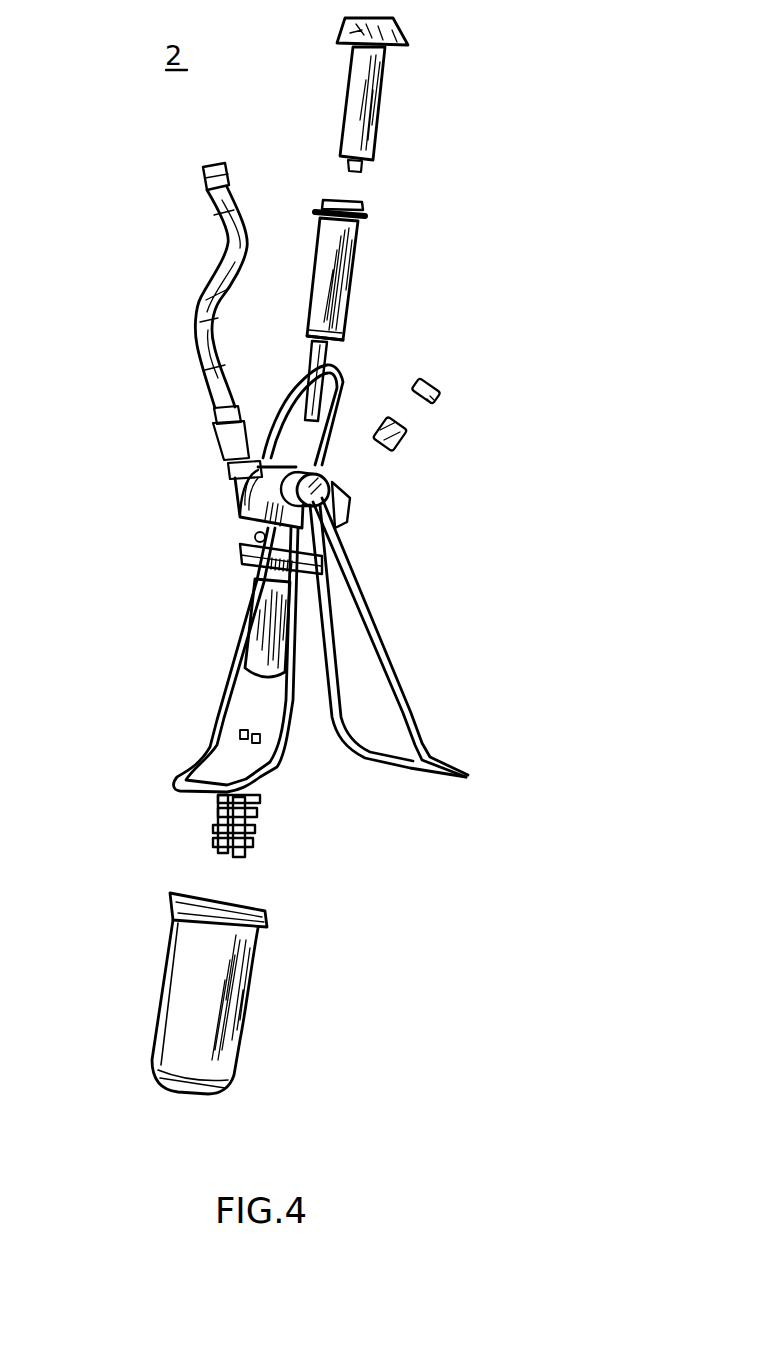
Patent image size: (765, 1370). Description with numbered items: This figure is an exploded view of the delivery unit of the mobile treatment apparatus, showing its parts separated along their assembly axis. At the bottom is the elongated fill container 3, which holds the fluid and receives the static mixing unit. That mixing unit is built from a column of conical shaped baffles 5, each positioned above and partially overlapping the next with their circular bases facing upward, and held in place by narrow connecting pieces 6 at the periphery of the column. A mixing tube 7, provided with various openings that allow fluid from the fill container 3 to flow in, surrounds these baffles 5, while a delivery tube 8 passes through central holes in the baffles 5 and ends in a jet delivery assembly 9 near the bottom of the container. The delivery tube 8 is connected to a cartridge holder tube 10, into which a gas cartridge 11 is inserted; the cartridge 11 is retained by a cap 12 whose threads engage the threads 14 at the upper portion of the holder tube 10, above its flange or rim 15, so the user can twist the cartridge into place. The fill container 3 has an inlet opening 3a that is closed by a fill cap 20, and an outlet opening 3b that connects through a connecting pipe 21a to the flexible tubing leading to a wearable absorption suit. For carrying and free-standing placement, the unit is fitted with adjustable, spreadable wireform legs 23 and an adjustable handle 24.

The fill container 3 is at (225, 995).
The inlet opening 3a is at (352, 507).
The outlet opening 3b is at (237, 487).
The conical shaped baffles 5 is at (258, 817).
The connecting pieces 6 is at (218, 813).
The mixing tube 7 is at (260, 612).
The delivery tube 8 is at (340, 342).
The jet delivery assembly 9 is at (305, 410).
The cartridge holder tube 10 is at (355, 257).
The gas cartridge 11 is at (372, 123).
The cap 12 is at (392, 27).
The threads 14 is at (357, 198).
The flange or rim 15 is at (364, 215).
The fill cap 20 is at (437, 398).
The connecting pipe 21a is at (217, 205).
The wireform legs 23 is at (383, 653).
The handle 24 is at (345, 397).